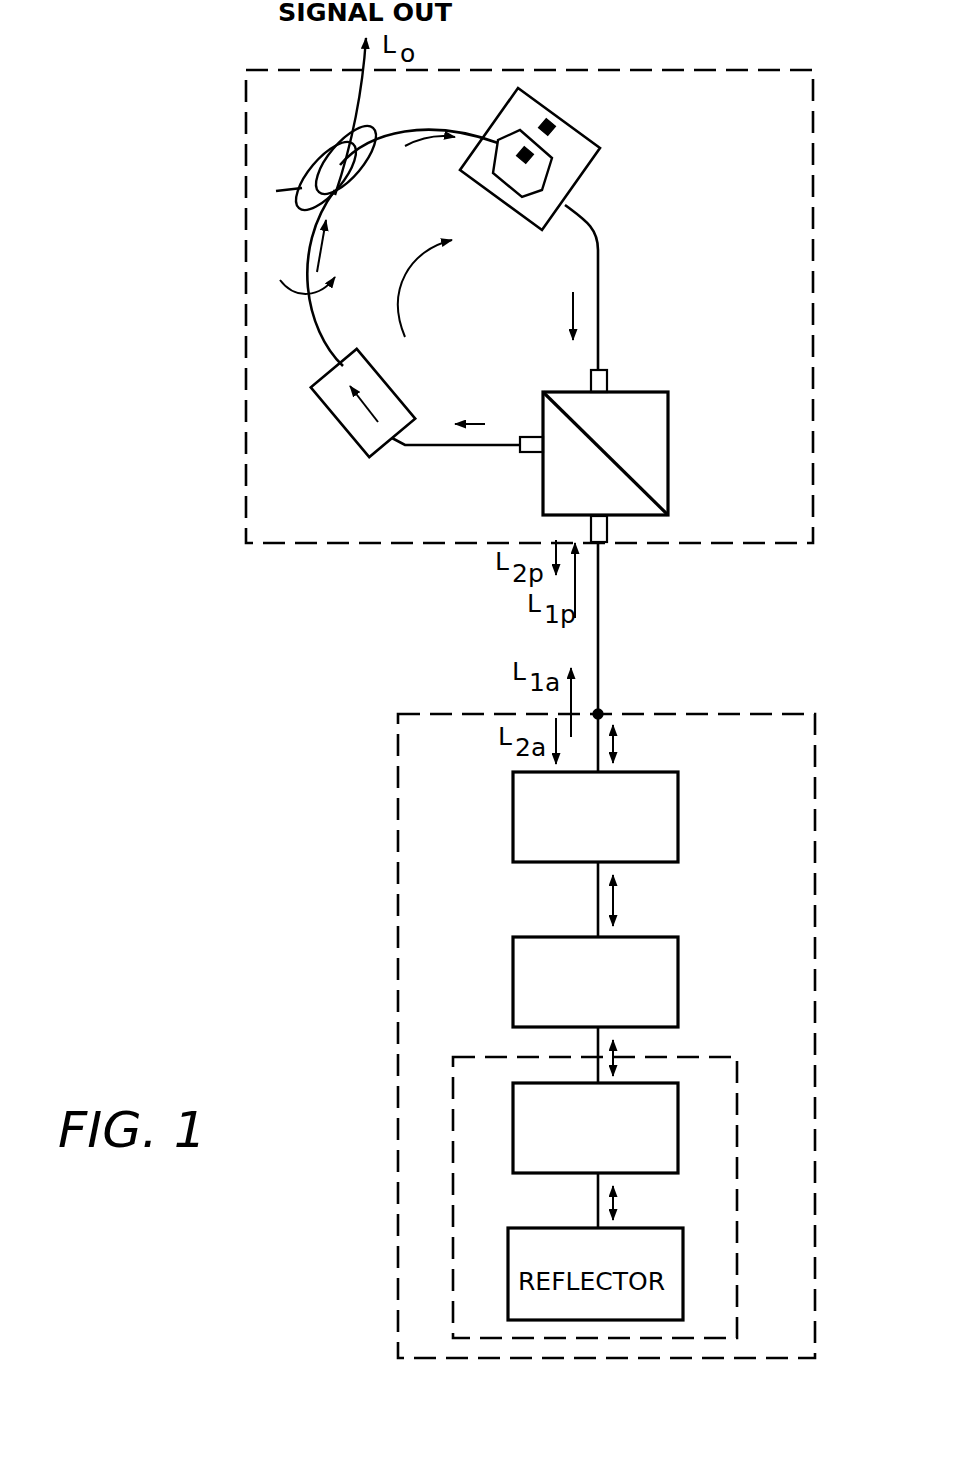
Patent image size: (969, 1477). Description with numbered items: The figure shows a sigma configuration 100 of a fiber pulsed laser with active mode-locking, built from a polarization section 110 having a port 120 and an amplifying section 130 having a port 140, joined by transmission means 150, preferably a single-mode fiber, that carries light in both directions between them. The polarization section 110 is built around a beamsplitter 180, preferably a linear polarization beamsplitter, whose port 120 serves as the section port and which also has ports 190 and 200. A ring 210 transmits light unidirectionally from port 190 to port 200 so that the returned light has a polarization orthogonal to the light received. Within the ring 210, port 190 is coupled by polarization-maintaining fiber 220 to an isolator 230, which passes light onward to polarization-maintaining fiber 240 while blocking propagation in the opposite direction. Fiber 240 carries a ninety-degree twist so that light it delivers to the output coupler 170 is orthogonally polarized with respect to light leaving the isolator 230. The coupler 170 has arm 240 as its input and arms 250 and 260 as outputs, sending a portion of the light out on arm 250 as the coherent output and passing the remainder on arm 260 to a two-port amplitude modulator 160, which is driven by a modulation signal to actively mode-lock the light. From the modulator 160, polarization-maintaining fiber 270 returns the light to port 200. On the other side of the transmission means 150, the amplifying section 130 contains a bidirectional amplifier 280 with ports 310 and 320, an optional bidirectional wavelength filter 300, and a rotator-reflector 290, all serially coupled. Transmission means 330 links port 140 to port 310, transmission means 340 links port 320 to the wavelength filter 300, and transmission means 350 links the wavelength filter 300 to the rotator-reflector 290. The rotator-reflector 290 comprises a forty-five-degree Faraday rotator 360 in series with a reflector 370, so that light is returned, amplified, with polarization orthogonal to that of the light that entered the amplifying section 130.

The sigma configuration of a fiber pulsed laser 100 is at (130, 774).
The polarization section 110 is at (787, 213).
The polarization section port 120 is at (608, 532).
The amplifying section 130 is at (783, 1060).
The amplifying section port 140 is at (600, 712).
The transmission means 150 is at (600, 628).
The amplitude modulator 160 is at (578, 152).
The output coupler 170 is at (322, 153).
The beamsplitter 180 is at (670, 448).
The beamsplitter port 190 is at (532, 452).
The beamsplitter port 200 is at (637, 402).
The ring 210 is at (470, 309).
The polarization-maintaining fiber 220 is at (437, 448).
The isolator 230 is at (353, 437).
The polarization-maintaining fiber 240 is at (322, 360).
The coupler output arm 250 is at (360, 105).
The coupler output arm 260 is at (388, 137).
The polarization-maintaining fiber 270 is at (647, 303).
The bidirectional amplifier 280 is at (672, 805).
The rotator-reflector 290 is at (717, 1228).
The wavelength filter 300 is at (670, 995).
The amplifier port 310 is at (600, 770).
The amplifier port 320 is at (610, 867).
The transmission means 330 is at (598, 760).
The transmission means 340 is at (597, 903).
The transmission means 350 is at (597, 1038).
The 45° Faraday rotator 360 is at (567, 1155).
The reflector 370 is at (628, 1242).